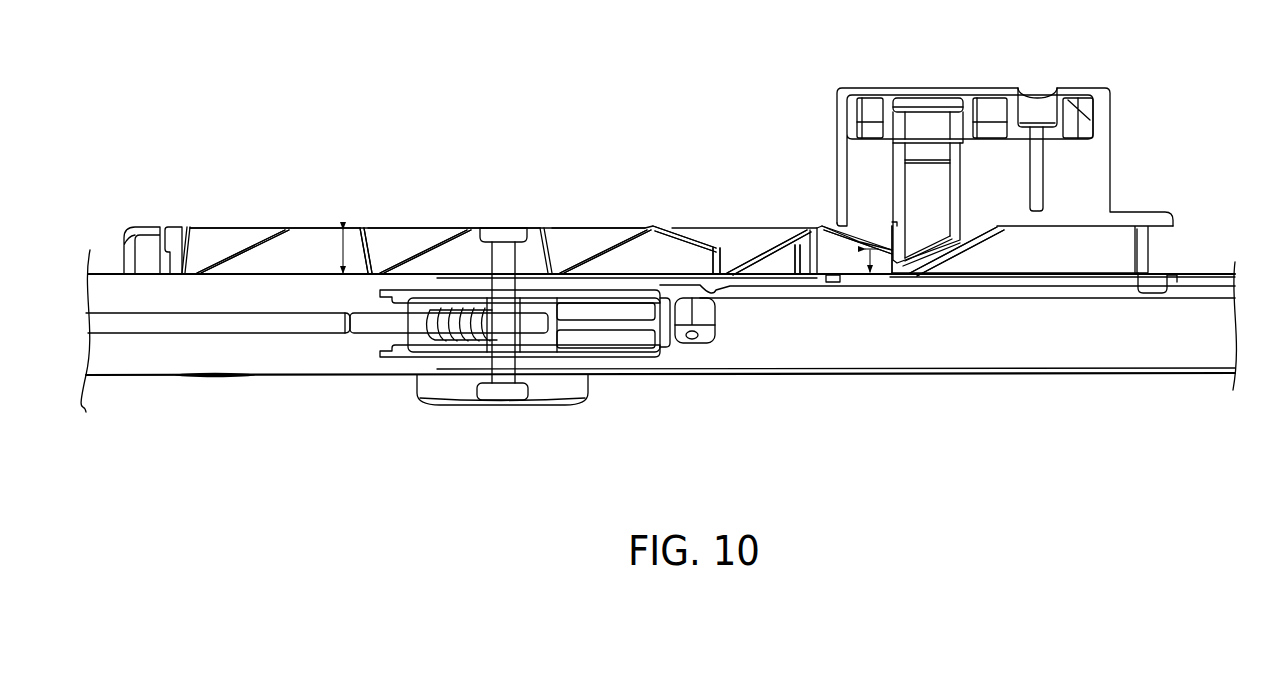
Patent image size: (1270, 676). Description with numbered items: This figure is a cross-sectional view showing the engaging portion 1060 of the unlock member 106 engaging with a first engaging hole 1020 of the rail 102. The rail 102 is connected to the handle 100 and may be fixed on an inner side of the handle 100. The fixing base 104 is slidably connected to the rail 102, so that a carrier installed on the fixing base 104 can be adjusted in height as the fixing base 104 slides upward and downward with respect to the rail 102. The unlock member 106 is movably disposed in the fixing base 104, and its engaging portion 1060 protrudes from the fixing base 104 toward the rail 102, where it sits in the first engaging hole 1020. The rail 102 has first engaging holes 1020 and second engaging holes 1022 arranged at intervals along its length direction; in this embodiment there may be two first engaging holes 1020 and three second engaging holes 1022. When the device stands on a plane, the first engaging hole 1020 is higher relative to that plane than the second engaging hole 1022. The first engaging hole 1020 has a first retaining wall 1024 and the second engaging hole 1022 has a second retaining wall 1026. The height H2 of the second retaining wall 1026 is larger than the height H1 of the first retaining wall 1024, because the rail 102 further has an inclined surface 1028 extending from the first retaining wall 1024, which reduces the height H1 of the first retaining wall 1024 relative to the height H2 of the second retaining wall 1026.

The handle 100 is at (1150, 374).
The rail 102 is at (1200, 262).
The fixing base 104 is at (1110, 115).
The unlock member 106 is at (928, 160).
The first engaging hole 1020 is at (753, 226).
The second engaging hole 1022 is at (231, 226).
The first retaining wall 1024 is at (891, 250).
The second retaining wall 1026 is at (367, 275).
The inclined surface 1028 is at (695, 226).
The engaging portion 1060 is at (932, 253).
The height of the first retaining wall H1 is at (858, 263).
The height of the second retaining wall H2 is at (327, 251).